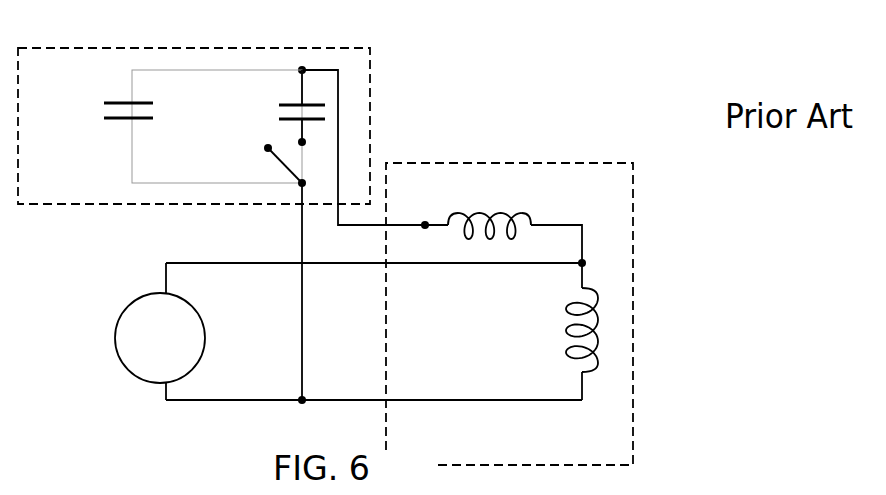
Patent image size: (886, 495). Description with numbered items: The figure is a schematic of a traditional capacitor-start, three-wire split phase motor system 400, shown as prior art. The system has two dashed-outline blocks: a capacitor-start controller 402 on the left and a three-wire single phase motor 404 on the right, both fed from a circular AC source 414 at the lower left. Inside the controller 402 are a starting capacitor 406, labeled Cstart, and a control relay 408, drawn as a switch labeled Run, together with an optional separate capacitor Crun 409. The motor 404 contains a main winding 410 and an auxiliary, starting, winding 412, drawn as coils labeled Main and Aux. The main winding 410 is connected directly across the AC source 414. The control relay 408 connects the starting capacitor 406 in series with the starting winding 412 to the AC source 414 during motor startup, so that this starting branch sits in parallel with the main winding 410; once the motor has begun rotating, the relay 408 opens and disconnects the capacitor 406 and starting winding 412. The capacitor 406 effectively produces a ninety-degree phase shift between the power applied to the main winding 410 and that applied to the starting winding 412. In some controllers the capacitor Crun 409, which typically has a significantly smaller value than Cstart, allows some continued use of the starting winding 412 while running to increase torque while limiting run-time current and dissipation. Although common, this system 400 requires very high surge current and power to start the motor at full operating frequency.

The split phase motor system 400 is at (639, 76).
The capacitor-start controller 402 is at (362, 120).
The 3-wire single phase motor 404 is at (617, 220).
The starting capacitor 406 is at (280, 102).
The control relay 408 is at (272, 162).
The capacitor Crun 409 is at (117, 101).
The main winding 410 is at (597, 343).
The auxiliary starting winding 412 is at (520, 217).
The AC source 414 is at (187, 331).